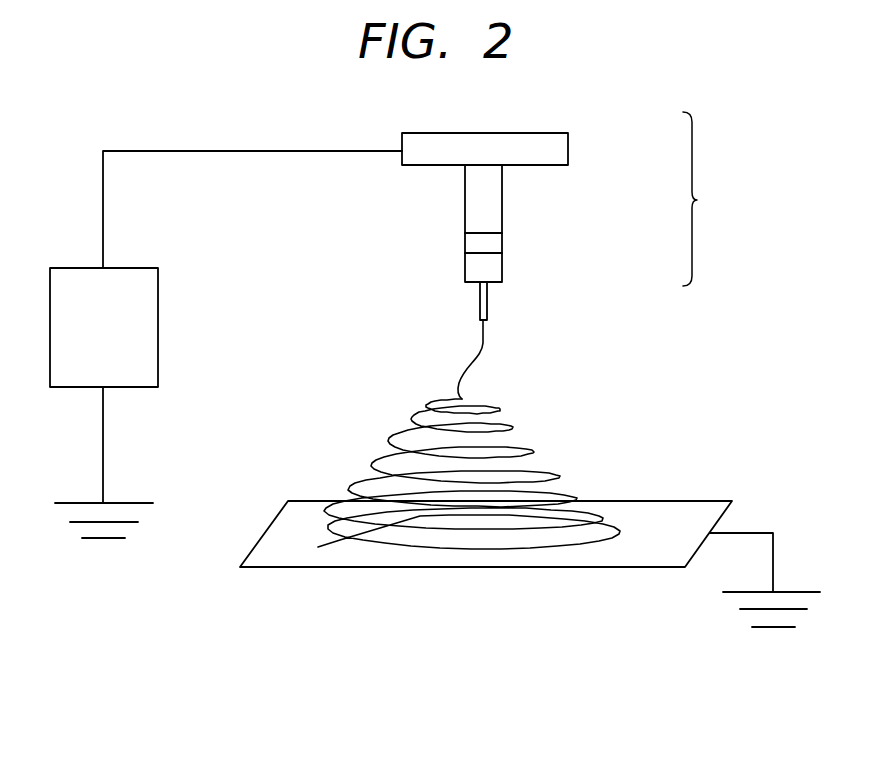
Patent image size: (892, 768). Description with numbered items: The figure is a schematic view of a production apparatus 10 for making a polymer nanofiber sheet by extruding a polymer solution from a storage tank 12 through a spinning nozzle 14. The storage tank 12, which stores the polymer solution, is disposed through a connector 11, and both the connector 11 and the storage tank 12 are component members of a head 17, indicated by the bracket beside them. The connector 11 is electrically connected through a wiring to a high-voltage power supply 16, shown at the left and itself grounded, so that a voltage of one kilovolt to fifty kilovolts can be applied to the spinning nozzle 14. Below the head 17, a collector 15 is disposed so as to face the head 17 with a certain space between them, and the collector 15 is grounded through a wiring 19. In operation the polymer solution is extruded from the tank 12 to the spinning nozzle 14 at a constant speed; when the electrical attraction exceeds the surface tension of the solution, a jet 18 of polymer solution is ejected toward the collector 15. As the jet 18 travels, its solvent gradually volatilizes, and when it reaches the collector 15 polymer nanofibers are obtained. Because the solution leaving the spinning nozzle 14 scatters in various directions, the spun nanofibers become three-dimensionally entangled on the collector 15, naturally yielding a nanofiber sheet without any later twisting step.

The production apparatus 10 is at (475, 650).
The connector 11 is at (570, 150).
The storage tank 12 is at (505, 222).
The spinning nozzle 14 is at (472, 293).
The collector 15 is at (677, 499).
The high-voltage power supply 16 is at (115, 395).
The head 17 is at (703, 199).
The jet 18 is at (490, 342).
The wiring 19 is at (755, 533).